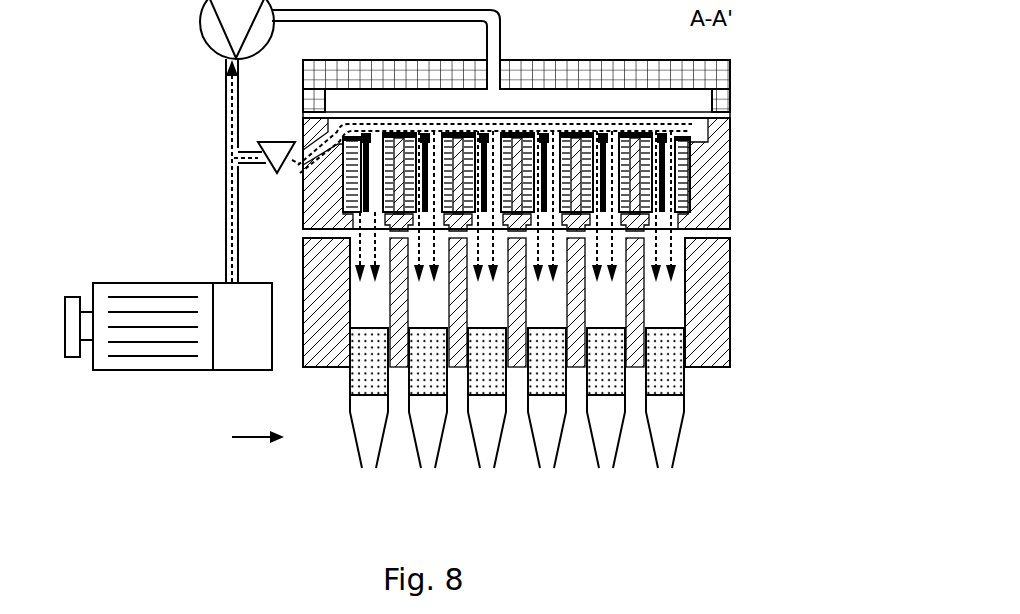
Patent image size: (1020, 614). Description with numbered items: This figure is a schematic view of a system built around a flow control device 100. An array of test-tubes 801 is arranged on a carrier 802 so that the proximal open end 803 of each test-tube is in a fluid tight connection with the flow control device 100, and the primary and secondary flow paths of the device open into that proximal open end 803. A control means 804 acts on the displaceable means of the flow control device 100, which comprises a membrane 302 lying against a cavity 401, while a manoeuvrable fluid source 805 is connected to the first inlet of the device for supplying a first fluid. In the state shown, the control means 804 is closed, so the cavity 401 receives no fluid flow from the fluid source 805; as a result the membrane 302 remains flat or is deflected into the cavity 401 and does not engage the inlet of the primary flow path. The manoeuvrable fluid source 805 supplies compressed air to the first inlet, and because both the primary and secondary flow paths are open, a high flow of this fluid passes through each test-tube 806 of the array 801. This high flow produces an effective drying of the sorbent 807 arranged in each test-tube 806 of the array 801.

The flow control device 100 is at (812, 148).
The membrane 302 is at (543, 111).
The cavity 401 is at (704, 104).
The array of test-tubes 801 is at (230, 439).
The carrier 802 is at (733, 326).
The proximal open end 803 is at (688, 233).
The control means 804 is at (203, 38).
The manoeuvrable fluid source 805 is at (117, 283).
The test-tube 806 is at (268, 142).
The sorbent 807 is at (352, 390).